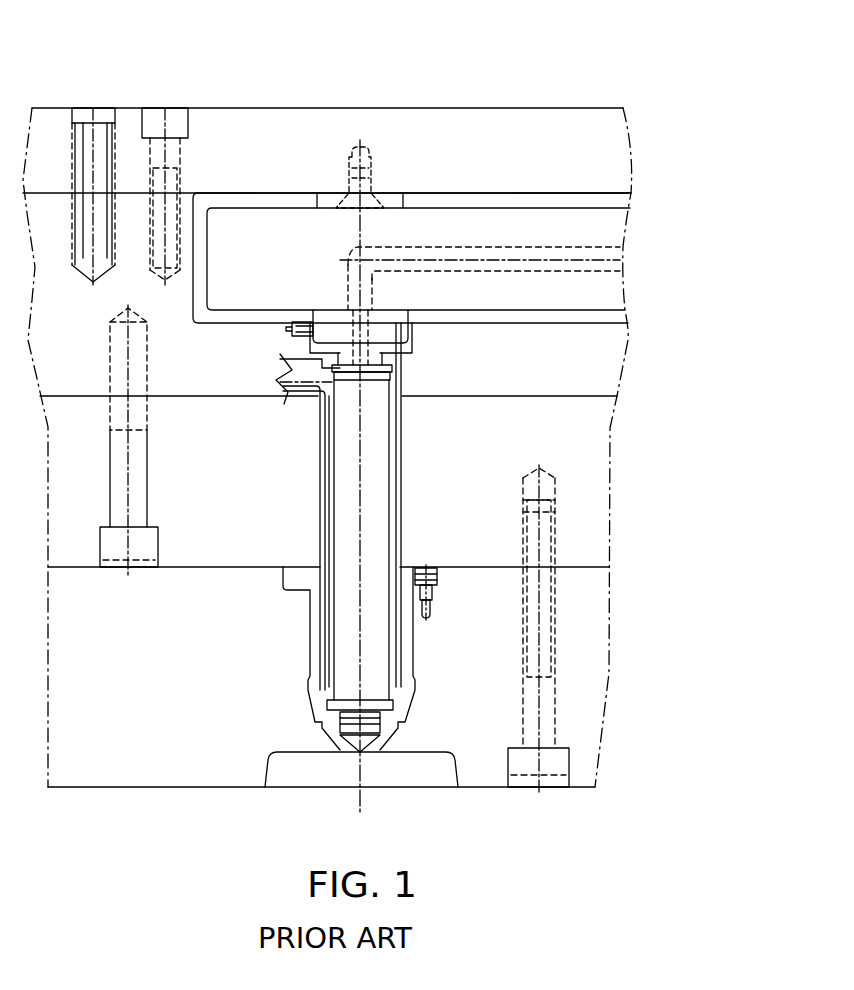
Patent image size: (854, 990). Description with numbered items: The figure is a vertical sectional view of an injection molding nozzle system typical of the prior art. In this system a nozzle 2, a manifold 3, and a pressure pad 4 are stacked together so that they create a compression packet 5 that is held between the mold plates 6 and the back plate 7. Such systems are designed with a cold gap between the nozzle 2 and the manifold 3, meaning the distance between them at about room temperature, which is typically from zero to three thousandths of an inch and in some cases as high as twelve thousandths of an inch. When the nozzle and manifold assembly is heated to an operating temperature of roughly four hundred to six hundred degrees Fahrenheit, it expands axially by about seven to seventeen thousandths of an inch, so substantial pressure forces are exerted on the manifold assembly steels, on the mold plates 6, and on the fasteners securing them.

The nozzle 2 is at (374, 424).
The manifold 3 is at (545, 231).
The pressure pad 4 is at (392, 201).
The compression packet 5 is at (713, 119).
The mold plates 6 is at (665, 323).
The back plate 7 is at (502, 135).